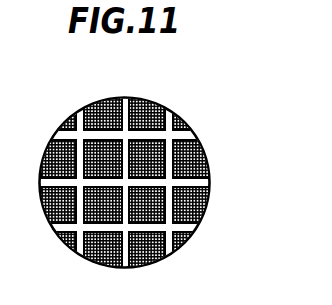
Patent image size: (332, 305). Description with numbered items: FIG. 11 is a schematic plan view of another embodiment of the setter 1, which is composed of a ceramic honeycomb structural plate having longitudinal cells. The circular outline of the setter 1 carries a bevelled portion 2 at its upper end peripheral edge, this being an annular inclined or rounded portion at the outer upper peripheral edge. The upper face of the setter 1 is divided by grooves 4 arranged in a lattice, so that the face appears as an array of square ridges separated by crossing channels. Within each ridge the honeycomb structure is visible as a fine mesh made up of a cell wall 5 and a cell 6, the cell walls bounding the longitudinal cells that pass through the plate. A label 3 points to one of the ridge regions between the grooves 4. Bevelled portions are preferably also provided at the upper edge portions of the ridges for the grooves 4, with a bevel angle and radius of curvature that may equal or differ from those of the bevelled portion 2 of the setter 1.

The setter 1 is at (150, 99).
The bevelled portion 2 is at (181, 124).
The semiconductor chip region 3 is at (156, 162).
The grooves 4 is at (187, 227).
The cell wall 5 is at (207, 190).
The cell 6 is at (207, 205).